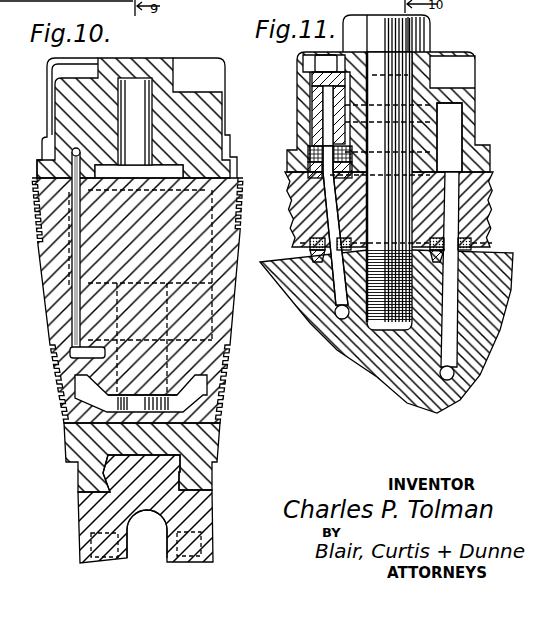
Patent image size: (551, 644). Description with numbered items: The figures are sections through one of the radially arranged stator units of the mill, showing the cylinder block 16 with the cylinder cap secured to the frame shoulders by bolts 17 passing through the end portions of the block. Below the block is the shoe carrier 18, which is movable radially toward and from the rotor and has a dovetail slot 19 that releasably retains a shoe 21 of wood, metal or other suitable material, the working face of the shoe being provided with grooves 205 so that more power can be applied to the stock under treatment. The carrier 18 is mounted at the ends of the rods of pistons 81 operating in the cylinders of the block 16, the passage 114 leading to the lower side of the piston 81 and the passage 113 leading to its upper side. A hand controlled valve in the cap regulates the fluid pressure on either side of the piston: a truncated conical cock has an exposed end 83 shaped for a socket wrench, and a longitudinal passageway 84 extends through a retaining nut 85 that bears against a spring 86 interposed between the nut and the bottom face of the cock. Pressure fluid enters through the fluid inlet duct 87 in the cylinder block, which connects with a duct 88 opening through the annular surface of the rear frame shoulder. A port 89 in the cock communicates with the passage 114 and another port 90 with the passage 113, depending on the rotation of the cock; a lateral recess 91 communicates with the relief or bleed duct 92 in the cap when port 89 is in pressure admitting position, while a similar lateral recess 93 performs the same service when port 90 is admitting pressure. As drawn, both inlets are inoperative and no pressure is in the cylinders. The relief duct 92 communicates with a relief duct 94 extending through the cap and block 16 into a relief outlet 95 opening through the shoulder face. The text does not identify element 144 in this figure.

In FIG. 10, the cylinder block 16 is at (226, 309).
In FIG. 11, the cylinder block 16 is at (476, 190).
In FIG. 11, the bolt 17 is at (387, 298).
In FIG. 10, the shoe carrier 18 is at (105, 432).
In FIG. 10, the dovetail slot 19 is at (180, 478).
In FIG. 10, the shoe 21 is at (104, 503).
In FIG. 10, the groove 205 is at (132, 538).
In FIG. 10, the passage 113 is at (133, 90).
In FIG. 11, the passage 113 is at (322, 104).
In FIG. 10, the passage 114 is at (82, 262).
In FIG. 11, the passage 114 is at (325, 139).
In FIG. 10, the flange 144 is at (36, 206).
In FIG. 10, the piston 81 is at (30, 273).
In FIG. 11, the exposed end 83 is at (326, 60).
In FIG. 11, the longitudinal passageway 84 is at (322, 113).
In FIG. 11, the retaining nut 85 is at (308, 166).
In FIG. 11, the spring 86 is at (352, 160).
In FIG. 11, the fluid inlet duct 87 is at (328, 206).
In FIG. 11, the duct 88 is at (333, 290).
In FIG. 11, the port 89 is at (350, 140).
In FIG. 11, the port 90 is at (320, 89).
In FIG. 11, the lateral recess 91 is at (312, 128).
In FIG. 11, the relief duct 92 is at (452, 72).
In FIG. 11, the lateral recess 93 is at (345, 135).
In FIG. 11, the relief duct 94 is at (460, 120).
In FIG. 11, the relief outlet 95 is at (453, 340).